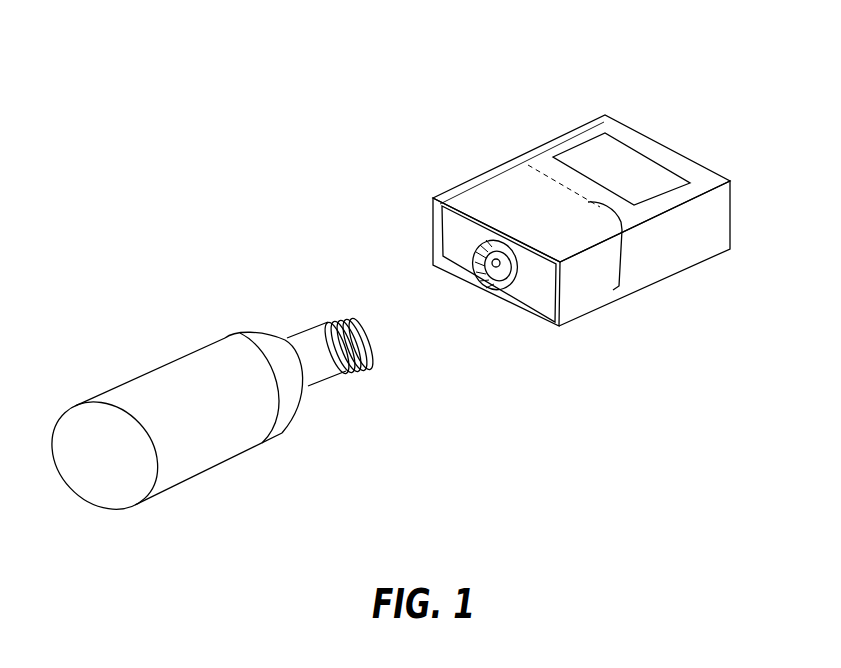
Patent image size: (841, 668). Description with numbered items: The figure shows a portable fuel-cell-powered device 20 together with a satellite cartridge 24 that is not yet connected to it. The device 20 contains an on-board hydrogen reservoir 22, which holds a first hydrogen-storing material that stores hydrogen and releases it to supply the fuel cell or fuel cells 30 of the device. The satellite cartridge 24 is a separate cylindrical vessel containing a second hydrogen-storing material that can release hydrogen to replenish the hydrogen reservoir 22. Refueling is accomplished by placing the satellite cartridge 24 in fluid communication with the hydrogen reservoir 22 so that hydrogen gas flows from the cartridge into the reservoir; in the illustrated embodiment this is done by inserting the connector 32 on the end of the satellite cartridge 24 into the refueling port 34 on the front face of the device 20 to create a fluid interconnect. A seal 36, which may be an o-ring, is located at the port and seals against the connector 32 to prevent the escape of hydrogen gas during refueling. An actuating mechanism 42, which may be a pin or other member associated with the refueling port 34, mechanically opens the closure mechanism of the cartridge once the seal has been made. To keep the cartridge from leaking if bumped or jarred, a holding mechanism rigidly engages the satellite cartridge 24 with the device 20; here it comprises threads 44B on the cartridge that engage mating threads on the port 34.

The portable fuel-cell-powered device 20 is at (522, 163).
The on-board hydrogen reservoir 22 is at (603, 205).
The satellite cartridge 24 is at (173, 358).
The fuel cells 30 is at (597, 158).
The connector 32 is at (330, 314).
The refueling port 34 is at (475, 250).
The seal 36 is at (521, 290).
The actuating mechanism 42 is at (486, 293).
The threads 44B is at (366, 362).